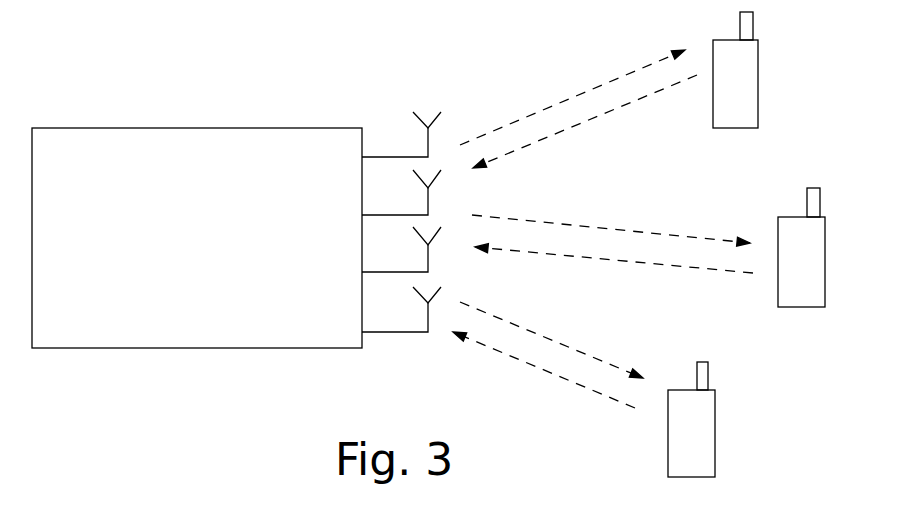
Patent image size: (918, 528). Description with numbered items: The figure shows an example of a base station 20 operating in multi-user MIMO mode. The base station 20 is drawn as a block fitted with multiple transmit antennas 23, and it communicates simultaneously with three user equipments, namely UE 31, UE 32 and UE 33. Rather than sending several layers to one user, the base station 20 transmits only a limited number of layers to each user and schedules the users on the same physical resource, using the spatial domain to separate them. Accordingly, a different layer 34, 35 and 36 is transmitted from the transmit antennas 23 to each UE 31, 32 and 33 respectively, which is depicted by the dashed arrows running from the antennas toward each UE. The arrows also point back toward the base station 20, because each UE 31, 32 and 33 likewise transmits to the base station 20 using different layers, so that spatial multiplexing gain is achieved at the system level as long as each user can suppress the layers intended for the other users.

The base station 20 is at (197, 238).
The transmit antennas 23 is at (423, 336).
The UE 31 is at (735, 70).
The UE 32 is at (801, 247).
The UE 33 is at (691, 419).
The layer 34 is at (580, 85).
The layer 35 is at (590, 218).
The layer 36 is at (548, 322).